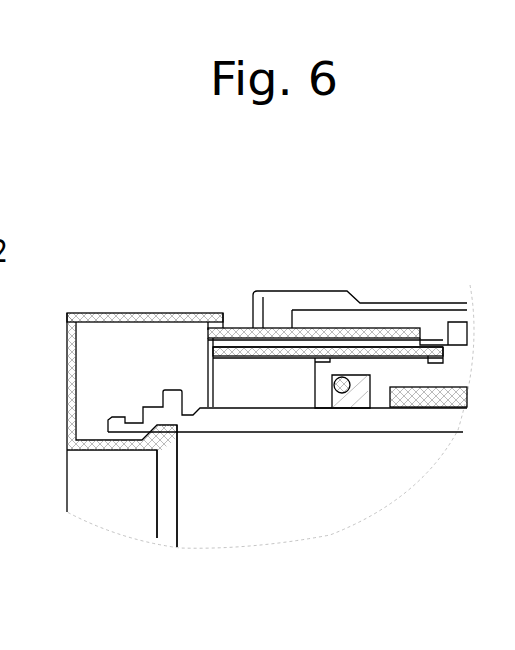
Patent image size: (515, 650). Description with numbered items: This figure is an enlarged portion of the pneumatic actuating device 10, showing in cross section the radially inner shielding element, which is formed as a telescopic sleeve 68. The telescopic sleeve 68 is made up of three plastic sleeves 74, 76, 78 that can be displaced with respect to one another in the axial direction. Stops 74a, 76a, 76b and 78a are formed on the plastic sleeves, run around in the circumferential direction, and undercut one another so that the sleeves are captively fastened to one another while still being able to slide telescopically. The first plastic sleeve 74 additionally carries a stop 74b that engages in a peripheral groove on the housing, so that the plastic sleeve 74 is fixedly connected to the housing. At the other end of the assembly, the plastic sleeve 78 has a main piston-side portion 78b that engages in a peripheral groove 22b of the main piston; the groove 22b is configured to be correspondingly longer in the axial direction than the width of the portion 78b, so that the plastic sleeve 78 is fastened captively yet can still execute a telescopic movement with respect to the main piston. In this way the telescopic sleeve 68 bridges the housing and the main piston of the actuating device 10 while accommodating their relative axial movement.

The pneumatic actuating device 10 is at (13, 87).
The groove 22b is at (372, 373).
The telescopic sleeve 68 is at (112, 265).
The first plastic sleeve 74 is at (80, 317).
The stop 74a is at (230, 323).
The stop 74b is at (160, 437).
The plastic sleeve 76 is at (246, 335).
The stop 76a is at (208, 328).
The stop 76b is at (428, 343).
The plastic sleeve 78 is at (360, 352).
The stop 78a is at (220, 347).
The main piston-side portion 78b is at (432, 358).